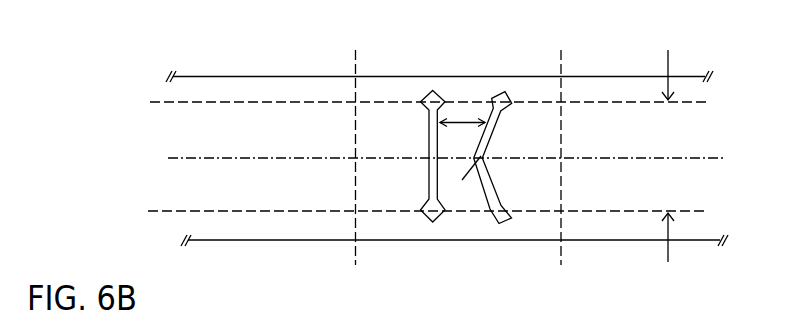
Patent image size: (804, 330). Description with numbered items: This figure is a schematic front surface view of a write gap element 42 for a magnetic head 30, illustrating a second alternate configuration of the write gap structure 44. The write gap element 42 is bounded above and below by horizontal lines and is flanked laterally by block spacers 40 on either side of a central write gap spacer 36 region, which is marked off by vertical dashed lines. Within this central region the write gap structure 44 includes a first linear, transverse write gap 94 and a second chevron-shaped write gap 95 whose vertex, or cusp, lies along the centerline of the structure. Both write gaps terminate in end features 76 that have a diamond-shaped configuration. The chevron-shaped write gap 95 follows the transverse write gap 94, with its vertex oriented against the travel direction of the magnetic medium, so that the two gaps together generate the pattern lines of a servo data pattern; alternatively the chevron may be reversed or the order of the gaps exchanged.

The magnetic head 30 is at (126, 50).
The write gap element 42 is at (270, 76).
The write gap structure 44 is at (394, 230).
The block spacers 40 is at (275, 274).
The write gap spacers 36 is at (467, 274).
The end features 76 is at (493, 98).
The first linear (transverse) write gap 94 is at (429, 147).
The second chevron-shaped write gap 95 is at (497, 188).